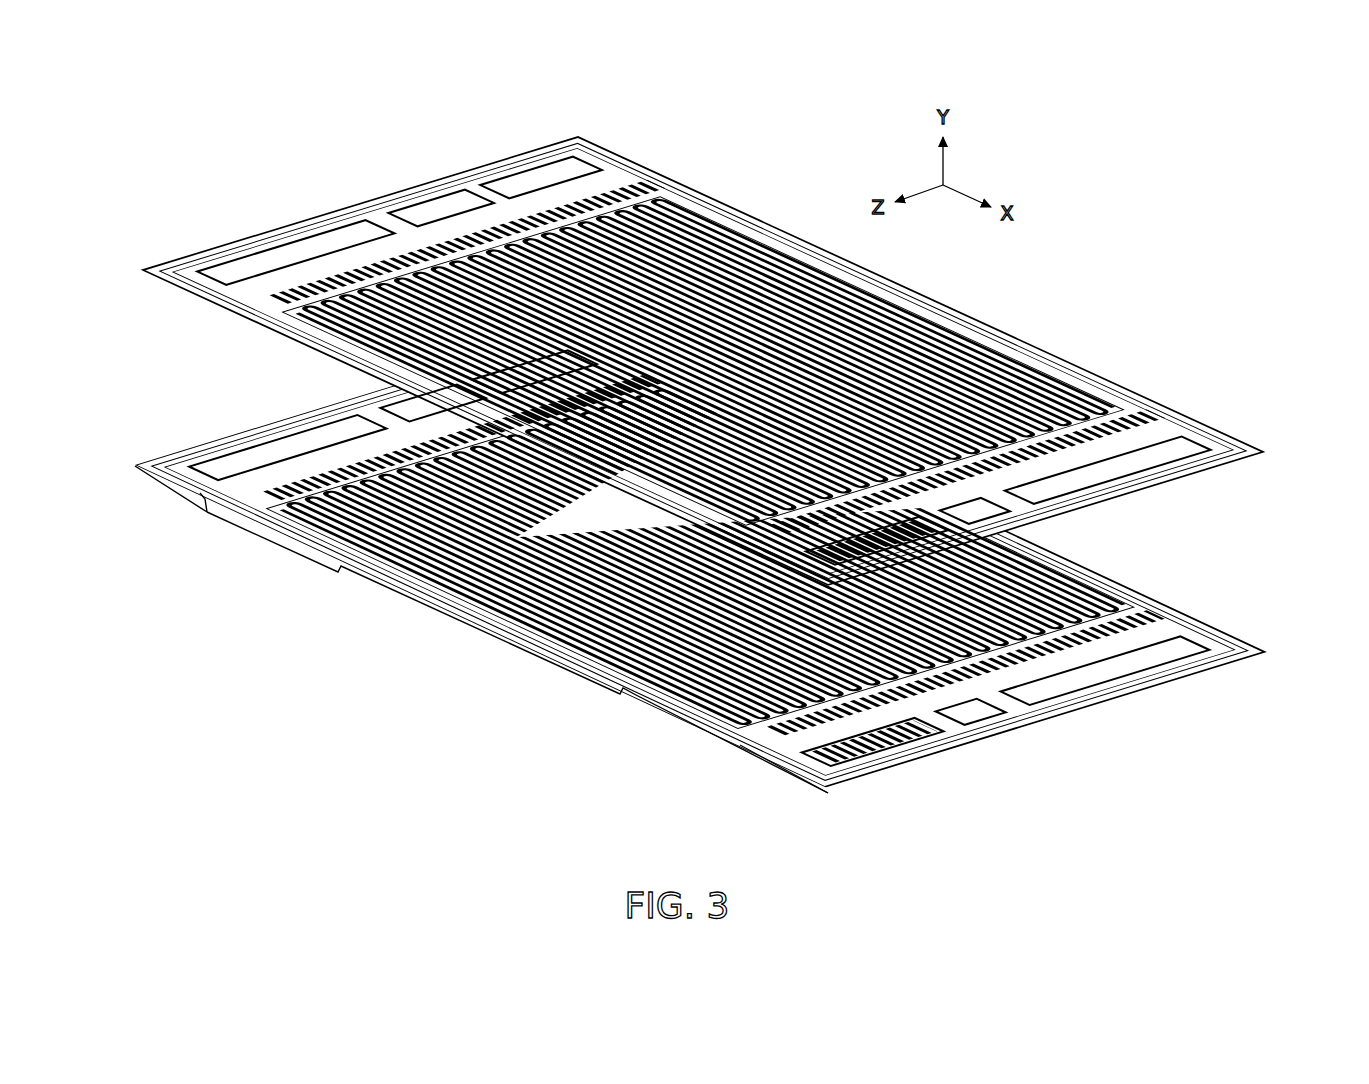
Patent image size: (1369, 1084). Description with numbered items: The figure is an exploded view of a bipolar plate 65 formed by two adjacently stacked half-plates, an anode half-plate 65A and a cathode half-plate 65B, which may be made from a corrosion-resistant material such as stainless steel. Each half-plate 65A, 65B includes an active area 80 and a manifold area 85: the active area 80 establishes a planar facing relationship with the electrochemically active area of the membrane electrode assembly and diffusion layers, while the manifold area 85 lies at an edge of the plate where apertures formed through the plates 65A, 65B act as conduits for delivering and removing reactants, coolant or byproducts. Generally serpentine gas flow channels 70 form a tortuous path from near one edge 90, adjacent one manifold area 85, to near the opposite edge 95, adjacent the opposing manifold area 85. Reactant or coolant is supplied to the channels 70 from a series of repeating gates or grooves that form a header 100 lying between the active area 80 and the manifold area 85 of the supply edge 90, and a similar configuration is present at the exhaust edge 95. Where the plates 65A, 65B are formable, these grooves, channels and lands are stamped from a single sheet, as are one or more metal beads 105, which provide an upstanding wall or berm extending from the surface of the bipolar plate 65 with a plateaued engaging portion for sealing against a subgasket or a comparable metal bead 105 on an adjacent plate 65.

The bipolar plate 65 is at (110, 250).
The anode half-plate 65A is at (1216, 418).
The cathode half-plate 65B is at (1258, 620).
The serpentine gas flow channels 70 is at (745, 276).
The active area 80 is at (505, 632).
The manifold area 85 is at (147, 492).
The edge 90 is at (290, 212).
The opposite edge 95 is at (1138, 500).
The header 100 is at (515, 222).
The metal bead 105 is at (225, 262).